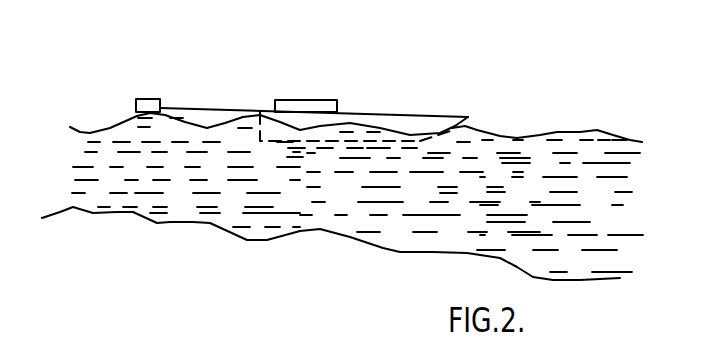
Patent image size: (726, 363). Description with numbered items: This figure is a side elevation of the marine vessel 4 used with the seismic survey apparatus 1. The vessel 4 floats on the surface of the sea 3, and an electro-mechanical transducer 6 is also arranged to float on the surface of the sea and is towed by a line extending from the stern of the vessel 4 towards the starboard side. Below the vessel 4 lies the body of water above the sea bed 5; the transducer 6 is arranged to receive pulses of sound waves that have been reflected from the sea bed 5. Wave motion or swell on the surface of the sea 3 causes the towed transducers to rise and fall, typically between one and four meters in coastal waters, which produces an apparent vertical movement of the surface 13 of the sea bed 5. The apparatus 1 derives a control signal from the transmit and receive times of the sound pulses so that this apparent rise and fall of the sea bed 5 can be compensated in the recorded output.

The seismic survey apparatus 1 is at (313, 100).
The surface of the sea 3 is at (557, 132).
The marine vessel 4 is at (420, 120).
The sea bed 5 is at (347, 277).
The electro-mechanical transducer 6 is at (150, 99).
The surface of the sea bed 13 is at (173, 223).